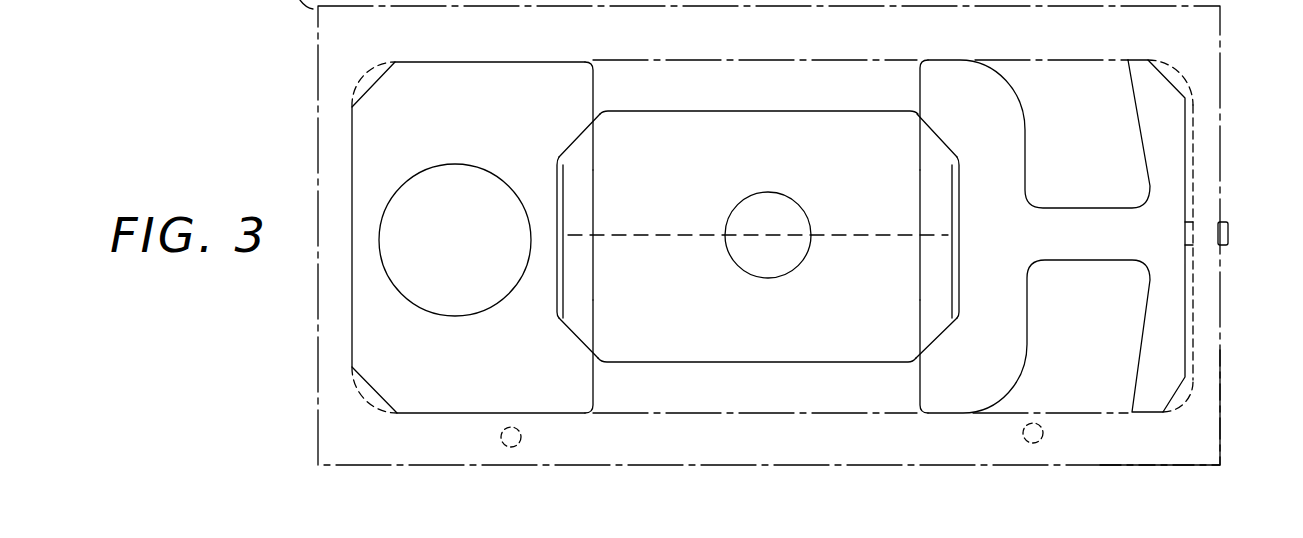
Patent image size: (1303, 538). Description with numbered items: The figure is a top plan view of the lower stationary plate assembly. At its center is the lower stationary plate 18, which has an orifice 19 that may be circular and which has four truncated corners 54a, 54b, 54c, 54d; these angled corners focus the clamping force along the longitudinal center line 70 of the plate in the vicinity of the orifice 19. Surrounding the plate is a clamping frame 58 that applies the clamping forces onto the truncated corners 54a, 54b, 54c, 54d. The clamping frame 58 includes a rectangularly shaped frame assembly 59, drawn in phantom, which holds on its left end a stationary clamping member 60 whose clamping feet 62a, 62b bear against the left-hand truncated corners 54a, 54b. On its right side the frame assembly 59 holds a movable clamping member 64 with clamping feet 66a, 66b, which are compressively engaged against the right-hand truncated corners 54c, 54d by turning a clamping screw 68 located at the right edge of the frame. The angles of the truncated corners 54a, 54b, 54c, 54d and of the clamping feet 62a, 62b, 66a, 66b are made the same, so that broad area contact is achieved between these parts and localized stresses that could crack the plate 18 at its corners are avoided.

The clamping frame 58 is at (311, 448).
The frame assembly 59 is at (1183, 447).
The stationary clamping member 60 is at (481, 128).
The lower stationary plate 18 is at (782, 158).
The orifice 19 is at (796, 264).
The longitudinal center line 70 is at (632, 212).
The movable clamping member 64 is at (1022, 251).
The clamping screw 68 is at (1228, 234).
The truncated corner 54a is at (583, 136).
The truncated corner 54b is at (575, 355).
The truncated corner 54c is at (920, 132).
The truncated corner 54d is at (947, 342).
The clamping foot 62a is at (583, 136).
The clamping foot 62b is at (577, 330).
The clamping foot 66a is at (920, 132).
The clamping foot 66b is at (938, 323).